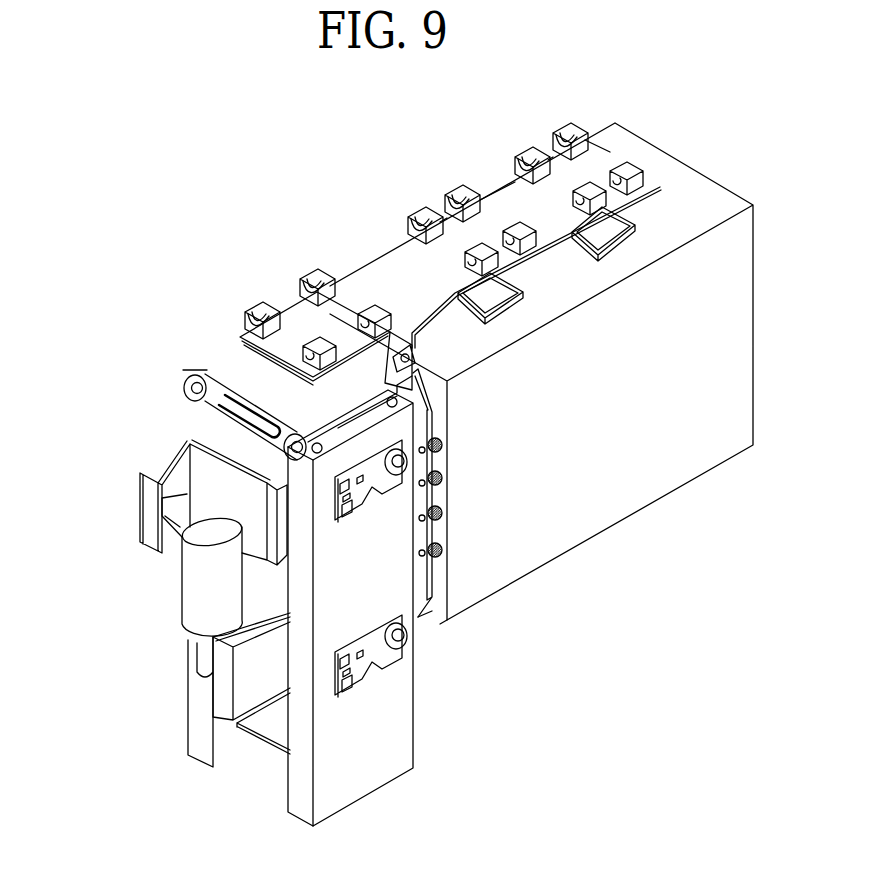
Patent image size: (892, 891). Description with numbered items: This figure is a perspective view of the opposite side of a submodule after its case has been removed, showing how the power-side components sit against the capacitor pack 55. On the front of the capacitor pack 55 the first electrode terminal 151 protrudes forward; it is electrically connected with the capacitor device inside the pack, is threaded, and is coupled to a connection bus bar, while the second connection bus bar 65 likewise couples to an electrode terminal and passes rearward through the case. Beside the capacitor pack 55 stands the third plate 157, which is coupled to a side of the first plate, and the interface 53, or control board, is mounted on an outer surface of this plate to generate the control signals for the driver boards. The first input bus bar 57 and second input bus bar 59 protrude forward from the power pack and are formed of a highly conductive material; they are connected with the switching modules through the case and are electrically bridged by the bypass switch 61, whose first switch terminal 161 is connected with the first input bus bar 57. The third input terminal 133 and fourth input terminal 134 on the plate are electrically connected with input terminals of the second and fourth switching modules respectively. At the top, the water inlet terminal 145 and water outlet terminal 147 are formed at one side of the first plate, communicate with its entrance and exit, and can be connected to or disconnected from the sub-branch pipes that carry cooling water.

The capacitor pack 55 is at (610, 515).
The interface 53 is at (378, 577).
The first input bus bar 57 is at (148, 504).
The second input bus bar 59 is at (215, 664).
The bypass switch 61 is at (190, 580).
The second connection bus bar 65 is at (450, 617).
The third input terminal 133 is at (385, 642).
The fourth input terminal 134 is at (372, 668).
The water inlet terminal 145 is at (183, 391).
The water outlet terminal 147 is at (190, 444).
The first electrode terminal 151 is at (443, 550).
The third plate 157 is at (390, 720).
The first switch terminal 161 is at (208, 532).